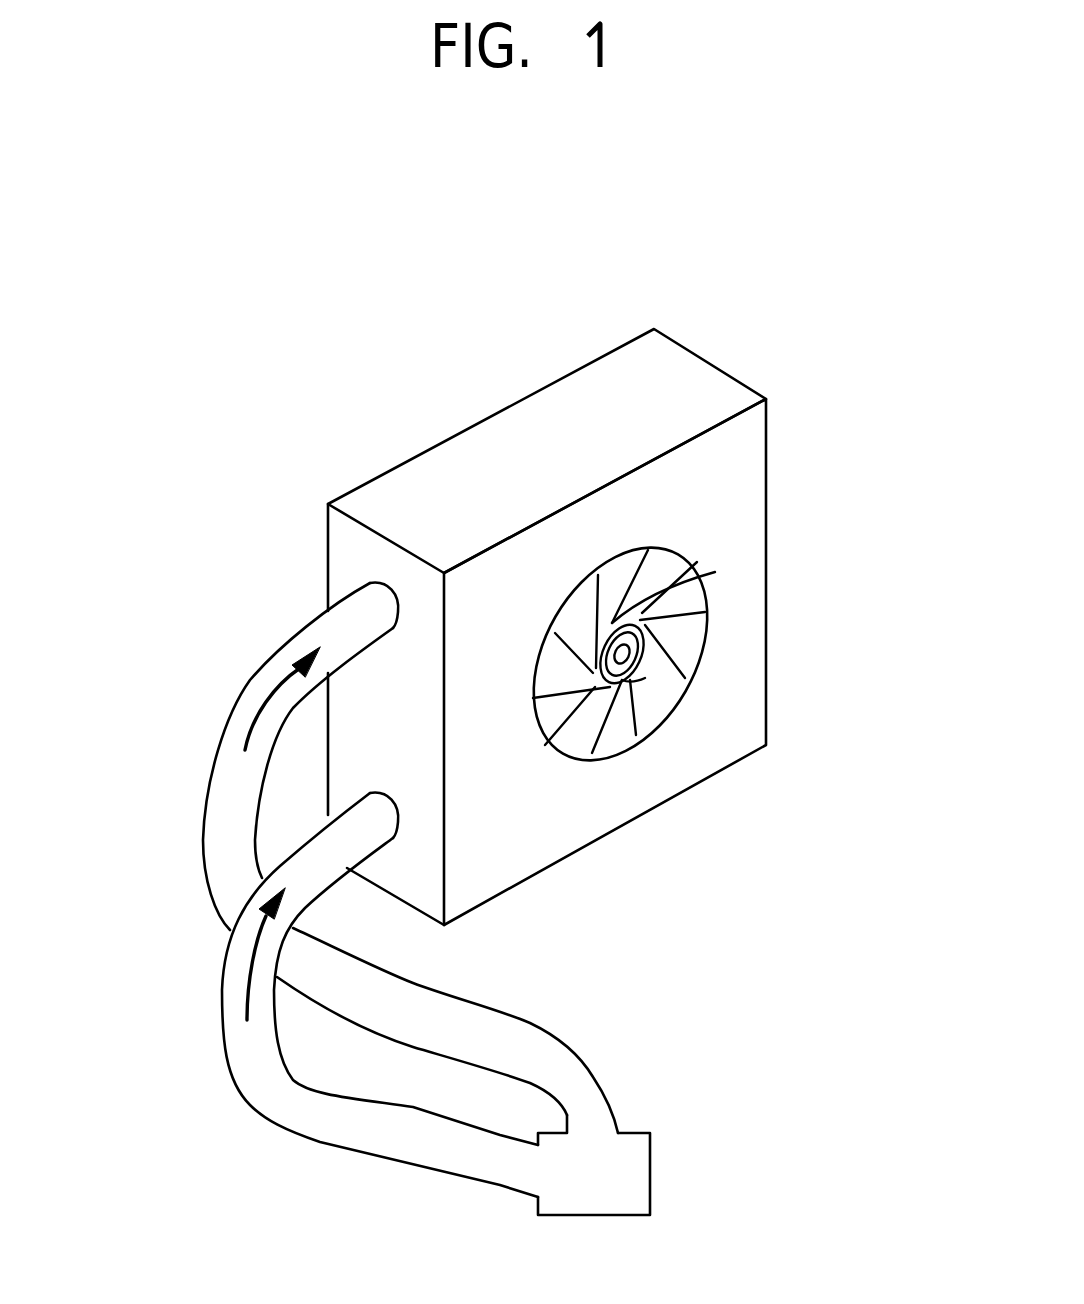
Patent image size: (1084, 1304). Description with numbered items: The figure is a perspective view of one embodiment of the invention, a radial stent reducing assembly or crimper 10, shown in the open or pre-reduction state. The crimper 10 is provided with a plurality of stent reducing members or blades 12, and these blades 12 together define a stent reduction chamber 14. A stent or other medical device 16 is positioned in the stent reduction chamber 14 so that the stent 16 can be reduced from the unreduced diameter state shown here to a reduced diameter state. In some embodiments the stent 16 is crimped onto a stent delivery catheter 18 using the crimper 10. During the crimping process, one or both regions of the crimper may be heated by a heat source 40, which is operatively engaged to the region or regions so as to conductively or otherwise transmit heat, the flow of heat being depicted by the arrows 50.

The crimper 10 is at (730, 352).
The blades 12 is at (683, 650).
The stent reduction chamber 14 is at (643, 680).
The stent 16 is at (703, 580).
The stent delivery catheter 18 is at (635, 685).
The heat source 40 is at (652, 1168).
The arrows 50 is at (265, 703).